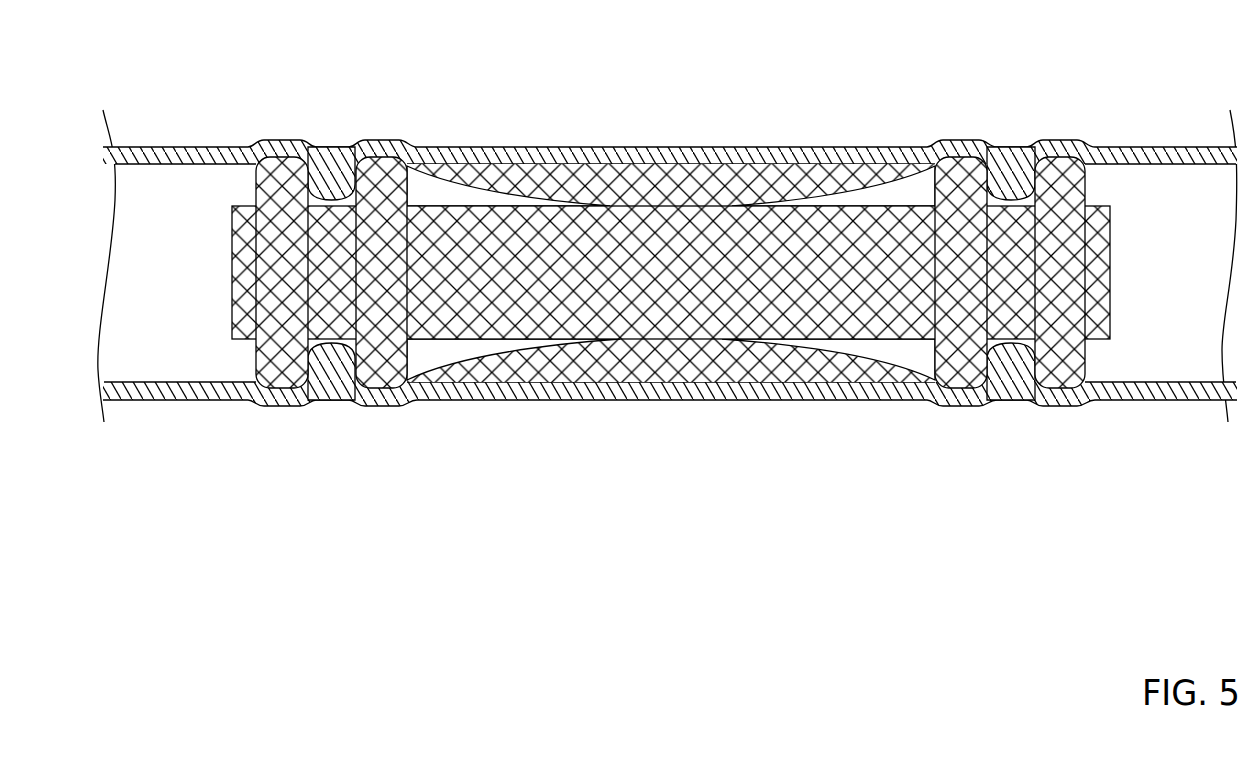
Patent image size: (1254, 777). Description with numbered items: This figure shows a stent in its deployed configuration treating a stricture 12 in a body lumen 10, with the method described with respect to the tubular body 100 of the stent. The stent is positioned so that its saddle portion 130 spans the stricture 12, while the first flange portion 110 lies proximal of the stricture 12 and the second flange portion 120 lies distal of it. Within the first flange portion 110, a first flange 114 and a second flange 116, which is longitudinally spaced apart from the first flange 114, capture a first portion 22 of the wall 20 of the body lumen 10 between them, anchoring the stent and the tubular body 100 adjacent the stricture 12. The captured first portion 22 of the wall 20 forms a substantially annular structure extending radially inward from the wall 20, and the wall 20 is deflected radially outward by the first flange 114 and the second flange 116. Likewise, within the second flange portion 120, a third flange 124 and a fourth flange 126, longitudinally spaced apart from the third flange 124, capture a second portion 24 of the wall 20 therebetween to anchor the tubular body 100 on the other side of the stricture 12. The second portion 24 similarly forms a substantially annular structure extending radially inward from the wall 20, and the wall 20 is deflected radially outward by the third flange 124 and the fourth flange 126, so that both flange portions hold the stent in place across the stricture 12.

The body lumen 10 is at (667, 246).
The wall 20 is at (672, 147).
The stricture 12 is at (405, 132).
The tubular body 100 is at (673, 257).
The first flange portion 110 is at (333, 282).
The second flange portion 120 is at (1013, 282).
The saddle portion 130 is at (671, 247).
The first flange 114 is at (277, 412).
The second flange 116 is at (383, 412).
The first portion 22 is at (333, 412).
The third flange 124 is at (1063, 412).
The fourth flange 126 is at (955, 412).
The second portion 24 is at (1007, 412).